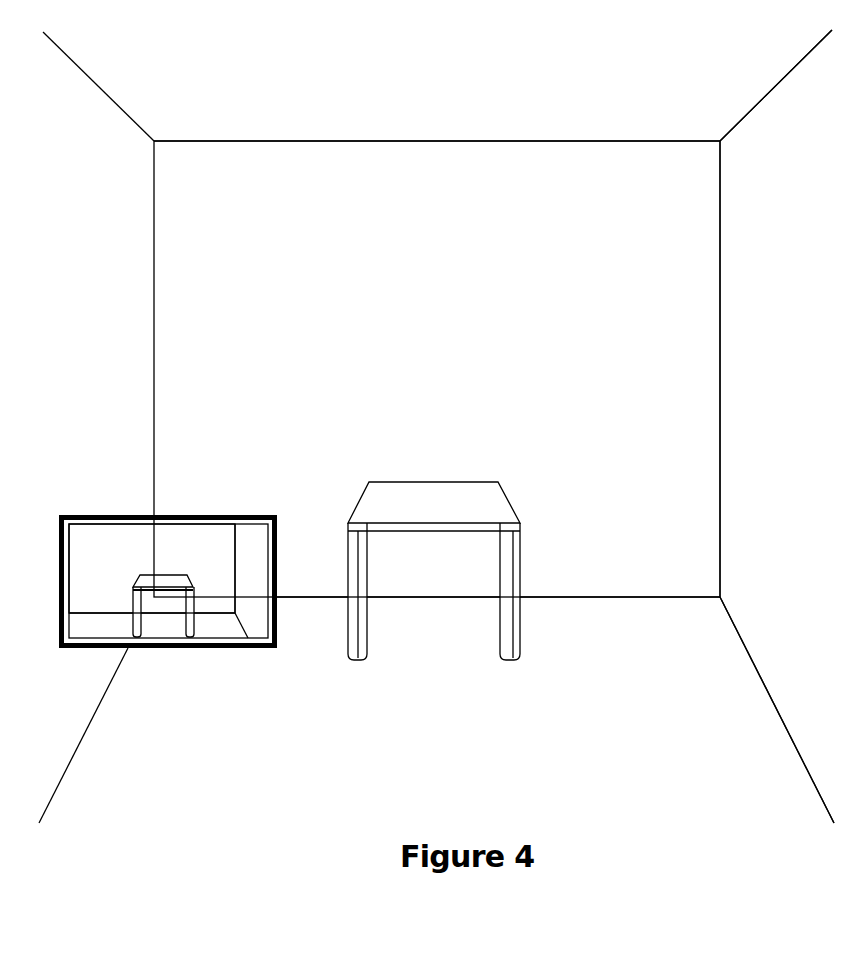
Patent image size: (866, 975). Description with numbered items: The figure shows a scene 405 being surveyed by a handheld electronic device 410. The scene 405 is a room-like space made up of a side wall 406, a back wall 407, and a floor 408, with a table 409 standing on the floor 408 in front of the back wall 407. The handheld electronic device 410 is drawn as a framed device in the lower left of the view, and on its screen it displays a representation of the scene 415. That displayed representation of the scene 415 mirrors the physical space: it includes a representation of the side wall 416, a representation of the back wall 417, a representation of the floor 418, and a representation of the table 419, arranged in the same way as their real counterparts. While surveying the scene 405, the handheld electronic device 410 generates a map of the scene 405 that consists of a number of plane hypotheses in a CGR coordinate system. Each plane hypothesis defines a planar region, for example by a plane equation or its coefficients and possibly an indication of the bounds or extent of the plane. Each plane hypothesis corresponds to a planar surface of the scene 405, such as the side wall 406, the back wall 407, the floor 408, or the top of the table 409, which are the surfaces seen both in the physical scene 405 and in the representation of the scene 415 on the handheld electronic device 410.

The scene 405 is at (711, 124).
The side wall 406 is at (799, 239).
The back wall 407 is at (514, 331).
The floor 408 is at (661, 636).
The table 409 is at (448, 482).
The handheld electronic device 410 is at (165, 515).
The representation of the scene 415 is at (200, 525).
The representation of the side wall 416 is at (257, 623).
The representation of the back wall 417 is at (138, 566).
The representation of the floor 418 is at (212, 622).
The representation of the table 419 is at (147, 576).